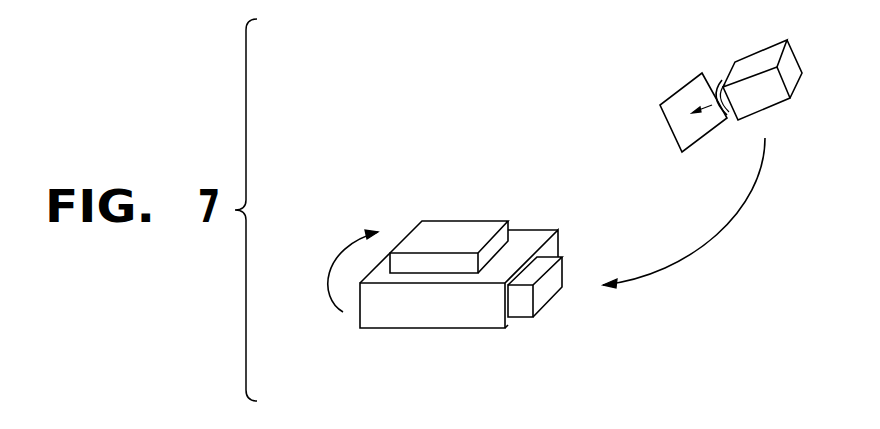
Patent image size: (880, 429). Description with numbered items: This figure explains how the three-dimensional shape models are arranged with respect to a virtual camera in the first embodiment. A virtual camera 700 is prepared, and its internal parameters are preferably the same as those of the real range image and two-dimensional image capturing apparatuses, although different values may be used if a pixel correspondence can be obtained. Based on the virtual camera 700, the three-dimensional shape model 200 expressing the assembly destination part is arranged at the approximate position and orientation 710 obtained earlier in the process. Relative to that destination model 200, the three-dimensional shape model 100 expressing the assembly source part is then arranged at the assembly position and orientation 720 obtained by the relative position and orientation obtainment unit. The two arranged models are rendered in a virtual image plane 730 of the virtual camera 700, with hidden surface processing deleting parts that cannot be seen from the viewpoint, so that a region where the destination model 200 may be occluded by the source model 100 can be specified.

The three-dimensional shape model 100 is at (458, 230).
The three-dimensional shape model 200 is at (437, 324).
The virtual camera 700 is at (780, 105).
The approximate position and orientation 710 is at (710, 243).
The assembly position and orientation 720 is at (327, 274).
The virtual image plane 730 is at (675, 95).